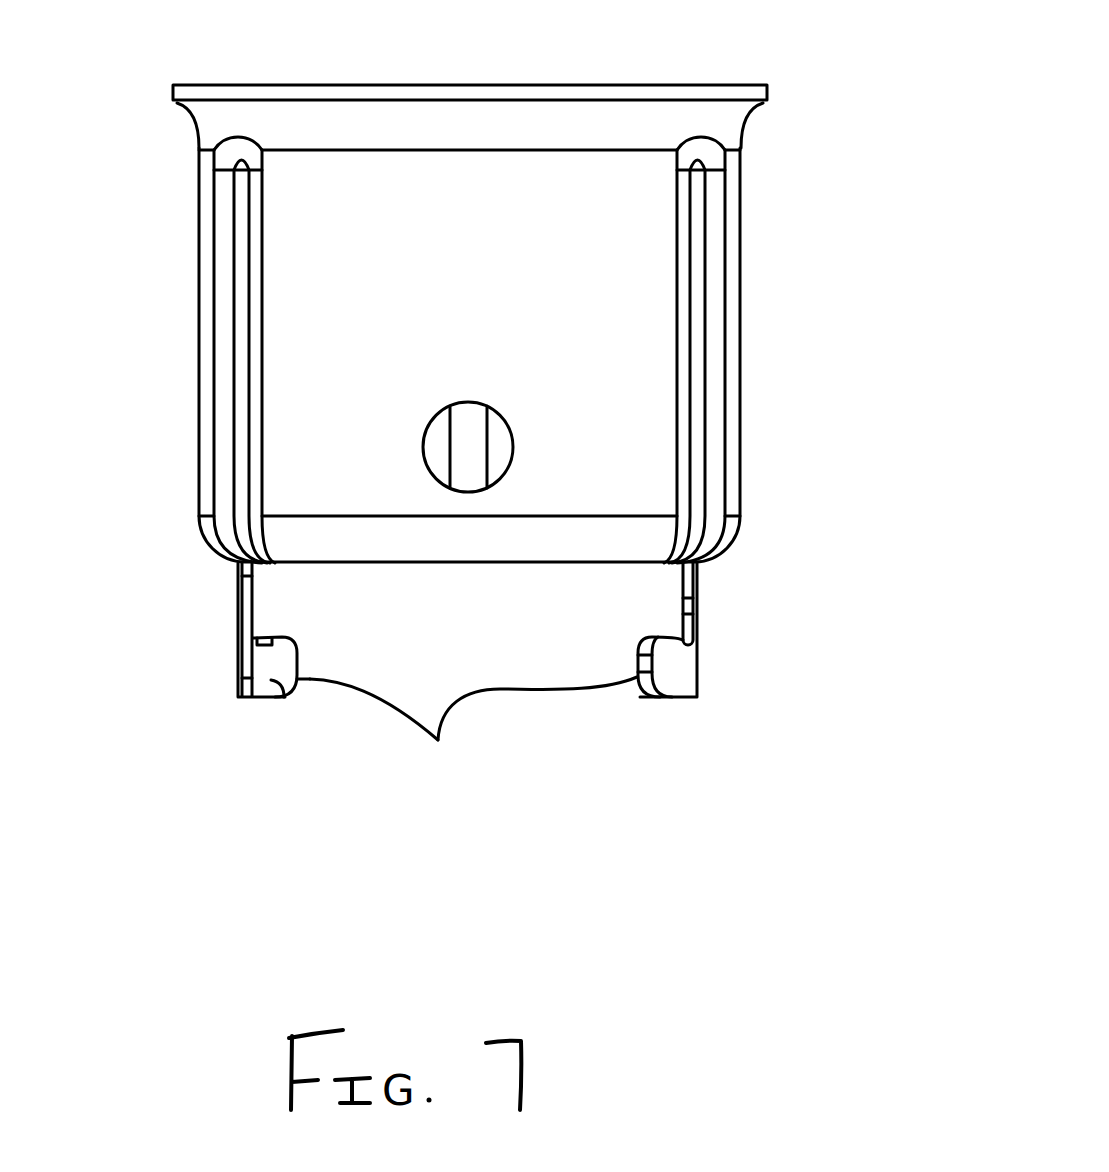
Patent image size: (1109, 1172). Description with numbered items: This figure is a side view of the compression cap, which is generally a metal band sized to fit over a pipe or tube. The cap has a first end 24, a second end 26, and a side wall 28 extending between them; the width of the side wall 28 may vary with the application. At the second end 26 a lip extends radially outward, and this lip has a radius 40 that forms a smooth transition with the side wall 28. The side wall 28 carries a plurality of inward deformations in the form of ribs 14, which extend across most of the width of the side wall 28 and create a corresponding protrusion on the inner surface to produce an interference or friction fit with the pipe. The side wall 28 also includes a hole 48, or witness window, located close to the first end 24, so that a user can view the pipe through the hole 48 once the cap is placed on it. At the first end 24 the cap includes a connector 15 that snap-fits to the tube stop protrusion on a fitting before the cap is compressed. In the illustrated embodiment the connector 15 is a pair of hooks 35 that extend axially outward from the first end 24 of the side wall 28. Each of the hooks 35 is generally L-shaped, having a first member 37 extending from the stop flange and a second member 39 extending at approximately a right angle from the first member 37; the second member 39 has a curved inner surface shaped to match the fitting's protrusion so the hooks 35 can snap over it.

The second end 26 is at (674, 85).
The radius 40 is at (745, 115).
The ribs 14 is at (244, 268).
The side wall 28 is at (640, 337).
The hole 48 is at (424, 444).
The first member 37 is at (237, 590).
The connector 15 is at (166, 633).
The first end 24 is at (617, 564).
The hooks 35 is at (473, 740).
The second member 39 is at (272, 682).